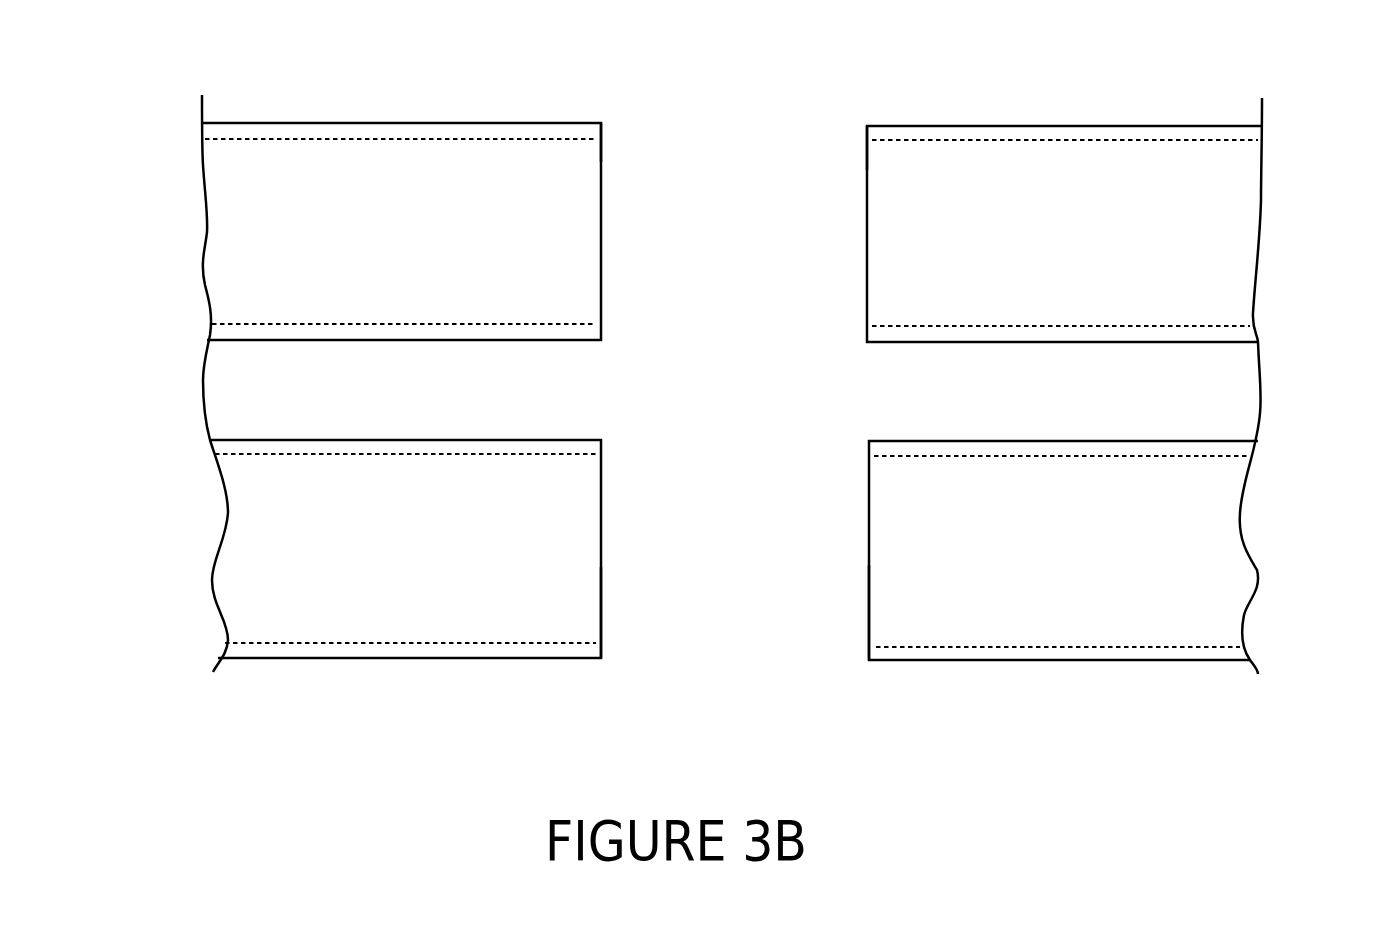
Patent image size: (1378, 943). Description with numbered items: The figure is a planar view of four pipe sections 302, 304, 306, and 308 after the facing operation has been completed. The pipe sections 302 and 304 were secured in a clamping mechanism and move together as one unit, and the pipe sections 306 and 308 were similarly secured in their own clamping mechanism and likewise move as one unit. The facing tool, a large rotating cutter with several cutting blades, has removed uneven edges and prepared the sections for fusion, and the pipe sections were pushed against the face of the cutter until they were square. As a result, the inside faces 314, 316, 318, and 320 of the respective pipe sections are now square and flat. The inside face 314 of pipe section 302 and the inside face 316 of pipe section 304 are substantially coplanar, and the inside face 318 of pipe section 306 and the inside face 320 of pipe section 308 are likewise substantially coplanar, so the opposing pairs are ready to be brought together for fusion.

The pipe section 302 is at (240, 247).
The pipe section 304 is at (250, 580).
The pipe section 306 is at (1213, 235).
The pipe section 308 is at (1230, 583).
The inside face 314 is at (601, 162).
The inside face 316 is at (601, 567).
The inside face 318 is at (867, 170).
The inside face 320 is at (869, 565).